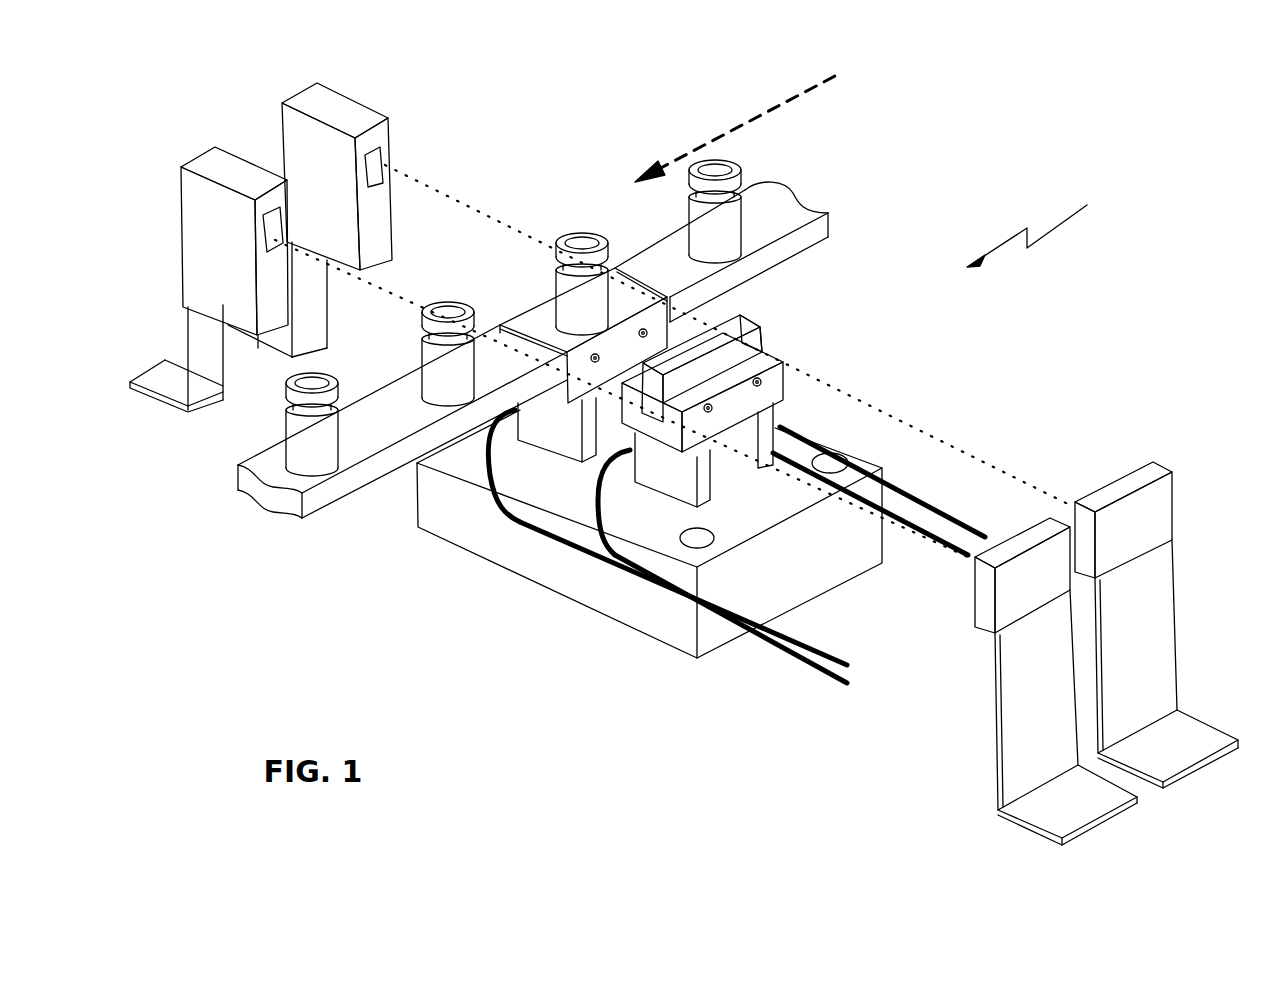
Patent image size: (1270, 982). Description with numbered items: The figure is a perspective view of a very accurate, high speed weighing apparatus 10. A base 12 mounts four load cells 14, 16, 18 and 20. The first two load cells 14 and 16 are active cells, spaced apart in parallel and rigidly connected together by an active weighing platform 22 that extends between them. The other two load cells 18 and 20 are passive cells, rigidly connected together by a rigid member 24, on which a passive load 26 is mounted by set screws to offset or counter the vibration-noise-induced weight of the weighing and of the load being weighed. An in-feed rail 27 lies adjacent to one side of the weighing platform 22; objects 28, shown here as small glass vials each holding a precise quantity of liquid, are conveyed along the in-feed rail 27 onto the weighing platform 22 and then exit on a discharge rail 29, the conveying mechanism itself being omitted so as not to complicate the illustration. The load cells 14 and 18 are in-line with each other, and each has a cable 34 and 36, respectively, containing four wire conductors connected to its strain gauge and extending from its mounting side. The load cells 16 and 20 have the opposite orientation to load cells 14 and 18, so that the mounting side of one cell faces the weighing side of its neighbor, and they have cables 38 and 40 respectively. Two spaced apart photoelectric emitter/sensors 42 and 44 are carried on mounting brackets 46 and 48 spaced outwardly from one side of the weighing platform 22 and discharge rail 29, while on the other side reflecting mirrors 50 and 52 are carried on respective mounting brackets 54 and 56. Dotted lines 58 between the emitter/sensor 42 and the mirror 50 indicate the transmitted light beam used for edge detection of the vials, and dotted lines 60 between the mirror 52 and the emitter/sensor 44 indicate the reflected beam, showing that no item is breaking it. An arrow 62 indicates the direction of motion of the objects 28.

The weighing apparatus 10 is at (1048, 222).
The base 12 is at (634, 612).
The active load cell 14 is at (558, 423).
The active load cell 16 is at (608, 397).
The passive load cell 18 is at (612, 393).
The passive load cell 20 is at (780, 418).
The active weighing platform 22 is at (538, 318).
The rigid member 24 is at (500, 432).
The passive load 26 is at (740, 323).
The in-feed rail 27 is at (778, 255).
The objects 28 is at (718, 230).
The discharge rail 29 is at (370, 470).
The cable 34 is at (762, 545).
The cable 36 is at (822, 650).
The cable 38 is at (920, 500).
The cable 40 is at (937, 533).
The photoelectric emitter/sensor 42 is at (348, 118).
The photoelectric emitter/sensor 44 is at (220, 250).
The mounting bracket 46 is at (308, 308).
The mounting bracket 48 is at (207, 365).
The reflecting mirror 50 is at (1133, 480).
The reflecting mirror 52 is at (973, 560).
The mounting bracket 54 is at (1137, 640).
The mounting bracket 56 is at (1042, 687).
The transmitted light beam 58 is at (877, 420).
The reflected light beam 60 is at (852, 513).
The arrow 62 is at (793, 98).